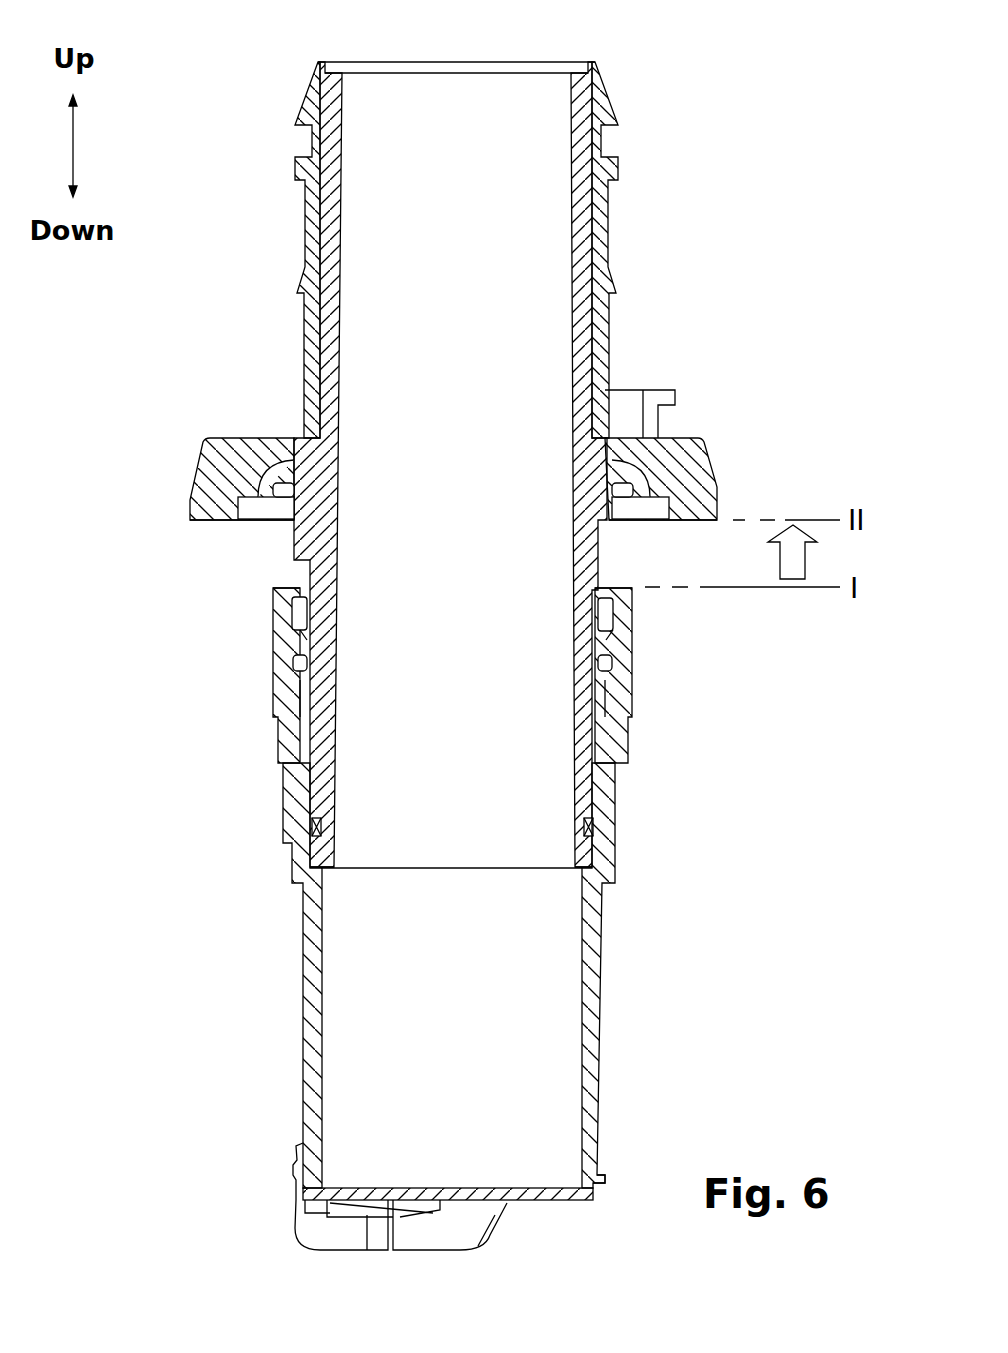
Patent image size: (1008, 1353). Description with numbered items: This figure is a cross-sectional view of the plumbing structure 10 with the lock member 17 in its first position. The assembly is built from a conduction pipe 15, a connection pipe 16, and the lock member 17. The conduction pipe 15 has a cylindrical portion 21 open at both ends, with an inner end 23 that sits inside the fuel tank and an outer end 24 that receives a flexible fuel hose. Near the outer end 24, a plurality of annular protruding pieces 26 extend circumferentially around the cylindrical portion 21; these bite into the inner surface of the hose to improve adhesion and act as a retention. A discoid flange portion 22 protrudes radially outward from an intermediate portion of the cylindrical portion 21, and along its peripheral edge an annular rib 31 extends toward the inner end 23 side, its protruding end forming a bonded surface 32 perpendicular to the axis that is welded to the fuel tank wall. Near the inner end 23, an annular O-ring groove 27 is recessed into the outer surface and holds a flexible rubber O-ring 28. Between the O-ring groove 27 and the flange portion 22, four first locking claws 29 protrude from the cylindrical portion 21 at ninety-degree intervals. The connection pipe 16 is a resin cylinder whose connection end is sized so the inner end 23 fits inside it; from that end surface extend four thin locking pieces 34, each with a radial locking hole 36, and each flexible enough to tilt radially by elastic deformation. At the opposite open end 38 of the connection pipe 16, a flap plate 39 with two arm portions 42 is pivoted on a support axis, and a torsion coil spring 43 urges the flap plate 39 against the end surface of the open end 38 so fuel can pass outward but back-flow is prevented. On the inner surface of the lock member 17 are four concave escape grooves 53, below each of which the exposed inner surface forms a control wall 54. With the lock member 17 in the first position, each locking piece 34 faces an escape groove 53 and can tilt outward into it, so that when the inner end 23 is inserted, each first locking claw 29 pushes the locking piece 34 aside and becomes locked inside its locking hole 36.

The plumbing structure 10 is at (688, 42).
The conduction pipe 15 is at (622, 144).
The connection pipe 16 is at (610, 1017).
The lock member 17 is at (638, 756).
The cylindrical portion 21 is at (300, 372).
The flange portion 22 is at (205, 432).
The inner end 23 is at (580, 862).
The outer end 24 is at (322, 63).
The annular protruding pieces 26 is at (300, 113).
The O-ring groove 27 is at (320, 830).
The O-ring 28 is at (585, 822).
The first locking claws 29 is at (300, 640).
The annular rib 31 is at (200, 510).
The bonded surface 32 is at (215, 522).
The locking pieces 34 is at (290, 614).
The locking hole 36 is at (294, 661).
The open end 38 is at (590, 1163).
The flap plate 39 is at (548, 1202).
The arm portions 42 is at (310, 1228).
The torsion coil spring 43 is at (422, 1215).
The escape grooves 53 is at (282, 585).
The control wall 54 is at (292, 692).